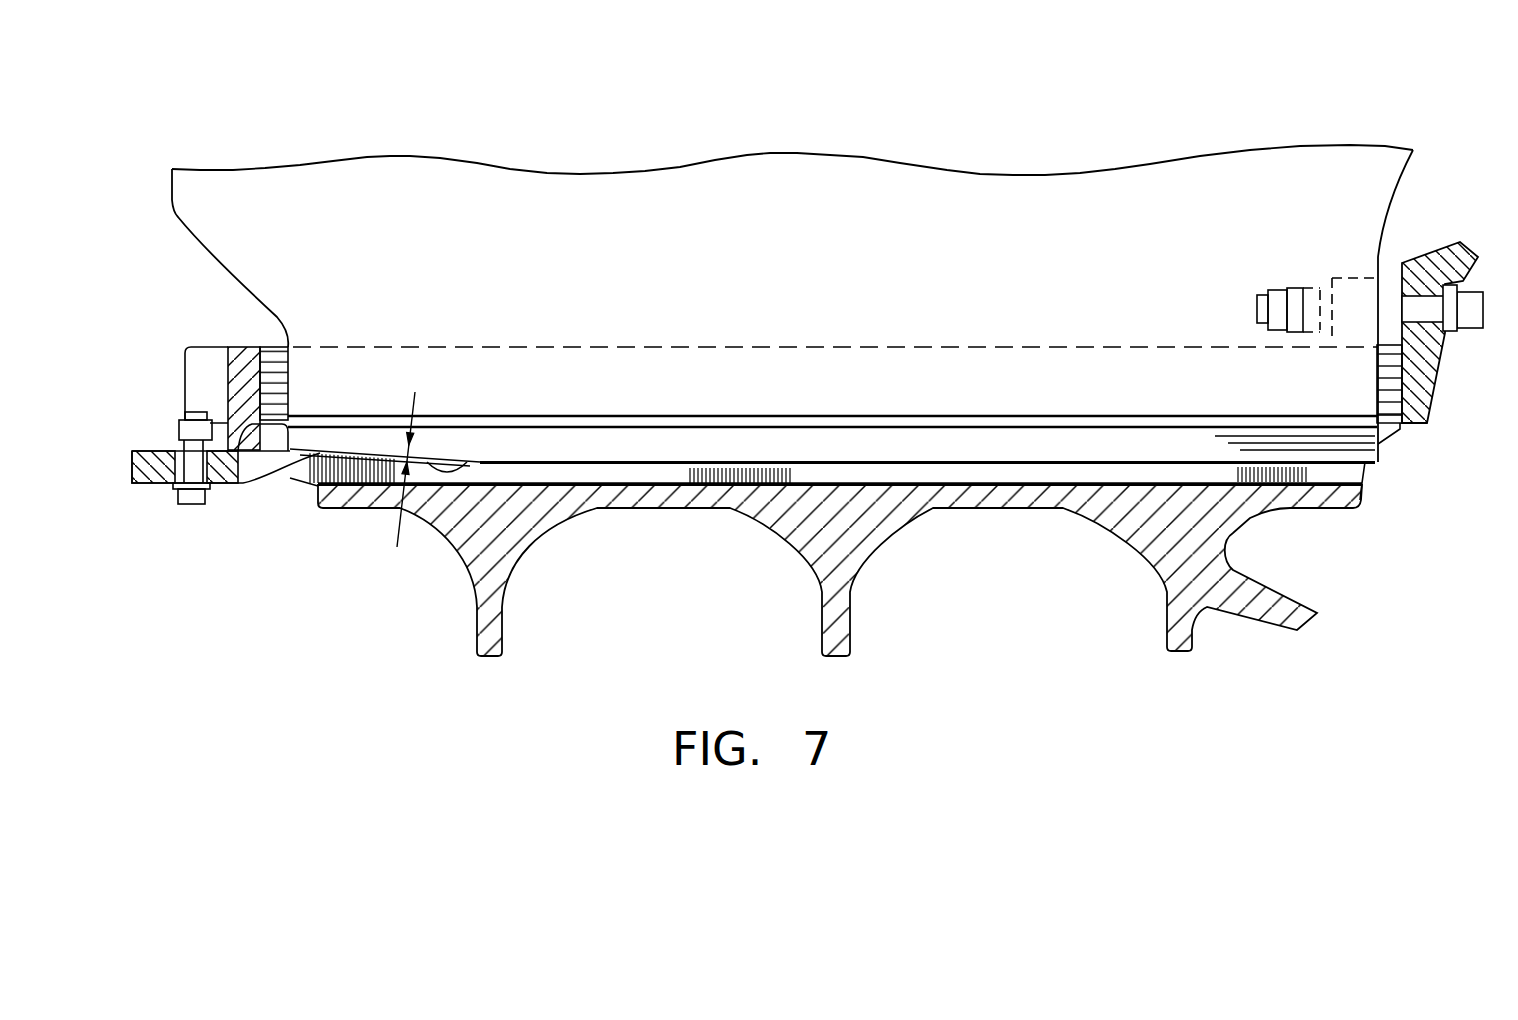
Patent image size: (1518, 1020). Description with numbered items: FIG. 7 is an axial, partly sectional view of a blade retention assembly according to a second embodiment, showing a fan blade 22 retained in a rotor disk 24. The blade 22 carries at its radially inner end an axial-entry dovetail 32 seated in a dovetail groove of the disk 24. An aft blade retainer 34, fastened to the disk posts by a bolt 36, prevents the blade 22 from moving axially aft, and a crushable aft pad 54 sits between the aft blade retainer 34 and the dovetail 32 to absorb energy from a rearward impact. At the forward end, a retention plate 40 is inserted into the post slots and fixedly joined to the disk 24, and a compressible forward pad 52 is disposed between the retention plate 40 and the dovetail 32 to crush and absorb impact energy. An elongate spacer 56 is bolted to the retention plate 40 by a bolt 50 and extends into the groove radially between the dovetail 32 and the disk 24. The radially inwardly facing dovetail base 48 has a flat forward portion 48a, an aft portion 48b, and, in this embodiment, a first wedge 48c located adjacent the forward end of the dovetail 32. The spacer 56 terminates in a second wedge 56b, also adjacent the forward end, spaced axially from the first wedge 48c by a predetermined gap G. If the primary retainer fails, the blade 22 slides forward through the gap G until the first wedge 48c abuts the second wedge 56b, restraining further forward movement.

The fan blade 22 is at (478, 163).
The rotor disk 24 is at (527, 547).
The axial-entry dovetail 32 is at (848, 414).
The aft blade retainer 34 is at (1437, 404).
The bolt 36 is at (1470, 332).
The retention plate 40 is at (238, 345).
The dovetail base 48 is at (797, 467).
The forward portion 48a is at (260, 478).
The first wedge 48b is at (1030, 463).
The first wedge 48c is at (467, 460).
The bolt 50 is at (190, 505).
The forward pad 52 is at (273, 347).
The aft pad 54 is at (1390, 430).
The elongate spacer 56 is at (371, 482).
The second wedge 56b is at (387, 435).
The gap G is at (398, 530).